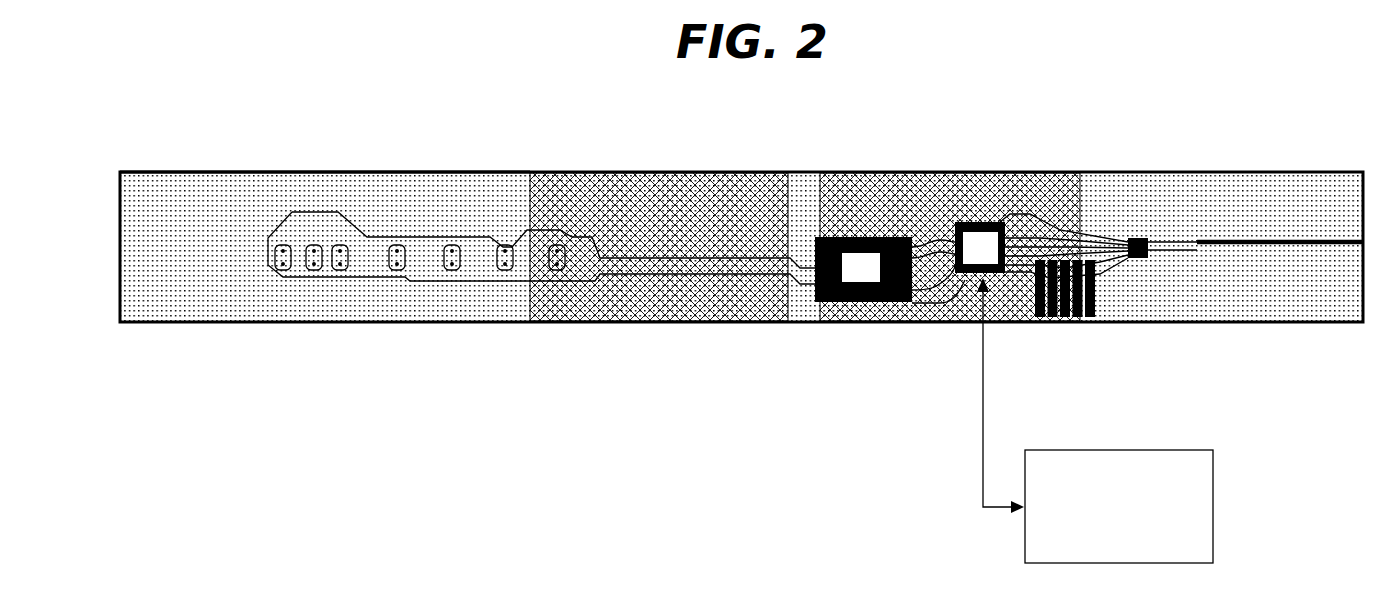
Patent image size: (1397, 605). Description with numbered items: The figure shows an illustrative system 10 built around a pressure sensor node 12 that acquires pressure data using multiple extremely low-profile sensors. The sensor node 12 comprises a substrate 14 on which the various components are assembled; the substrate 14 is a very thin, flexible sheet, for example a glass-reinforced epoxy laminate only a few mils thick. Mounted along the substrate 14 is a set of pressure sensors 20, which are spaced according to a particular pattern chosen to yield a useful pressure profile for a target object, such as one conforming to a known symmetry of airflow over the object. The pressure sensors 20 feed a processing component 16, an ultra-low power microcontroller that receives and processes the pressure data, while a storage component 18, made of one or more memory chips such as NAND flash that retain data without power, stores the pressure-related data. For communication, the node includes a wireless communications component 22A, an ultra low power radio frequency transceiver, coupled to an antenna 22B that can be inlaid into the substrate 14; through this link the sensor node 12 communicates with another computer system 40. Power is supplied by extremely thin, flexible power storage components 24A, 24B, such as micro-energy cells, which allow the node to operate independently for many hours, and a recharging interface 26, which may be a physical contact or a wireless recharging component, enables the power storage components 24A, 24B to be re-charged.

The system 10 is at (191, 520).
The pressure sensor node 12 is at (206, 143).
The substrate 14 is at (412, 180).
The processing component 16 is at (958, 262).
The storage component 18 is at (863, 269).
The pressure sensors 20 is at (283, 270).
The wireless communications component 22A is at (1137, 238).
The antenna 22B is at (1243, 240).
The power storage component 24A is at (667, 180).
The power storage component 24B is at (905, 180).
The recharging interface 26 is at (1070, 322).
The computer system 40 is at (1095, 420).